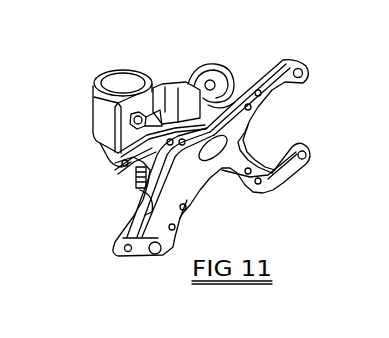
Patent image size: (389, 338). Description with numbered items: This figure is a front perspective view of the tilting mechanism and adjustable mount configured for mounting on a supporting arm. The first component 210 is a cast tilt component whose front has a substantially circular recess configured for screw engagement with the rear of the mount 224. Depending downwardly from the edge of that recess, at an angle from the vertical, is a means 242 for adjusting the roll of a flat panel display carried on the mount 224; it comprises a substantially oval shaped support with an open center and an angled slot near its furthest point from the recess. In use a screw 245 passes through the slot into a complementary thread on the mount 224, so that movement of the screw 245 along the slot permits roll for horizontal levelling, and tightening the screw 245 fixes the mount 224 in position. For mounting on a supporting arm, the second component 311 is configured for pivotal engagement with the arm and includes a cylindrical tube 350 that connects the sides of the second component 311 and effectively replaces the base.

The cylindrical tube 350 is at (118, 85).
The second component 311 is at (110, 122).
The first component 210 is at (197, 80).
The mount 224 is at (293, 60).
The screw 245 is at (148, 212).
The means for adjusting the roll 242 is at (122, 224).